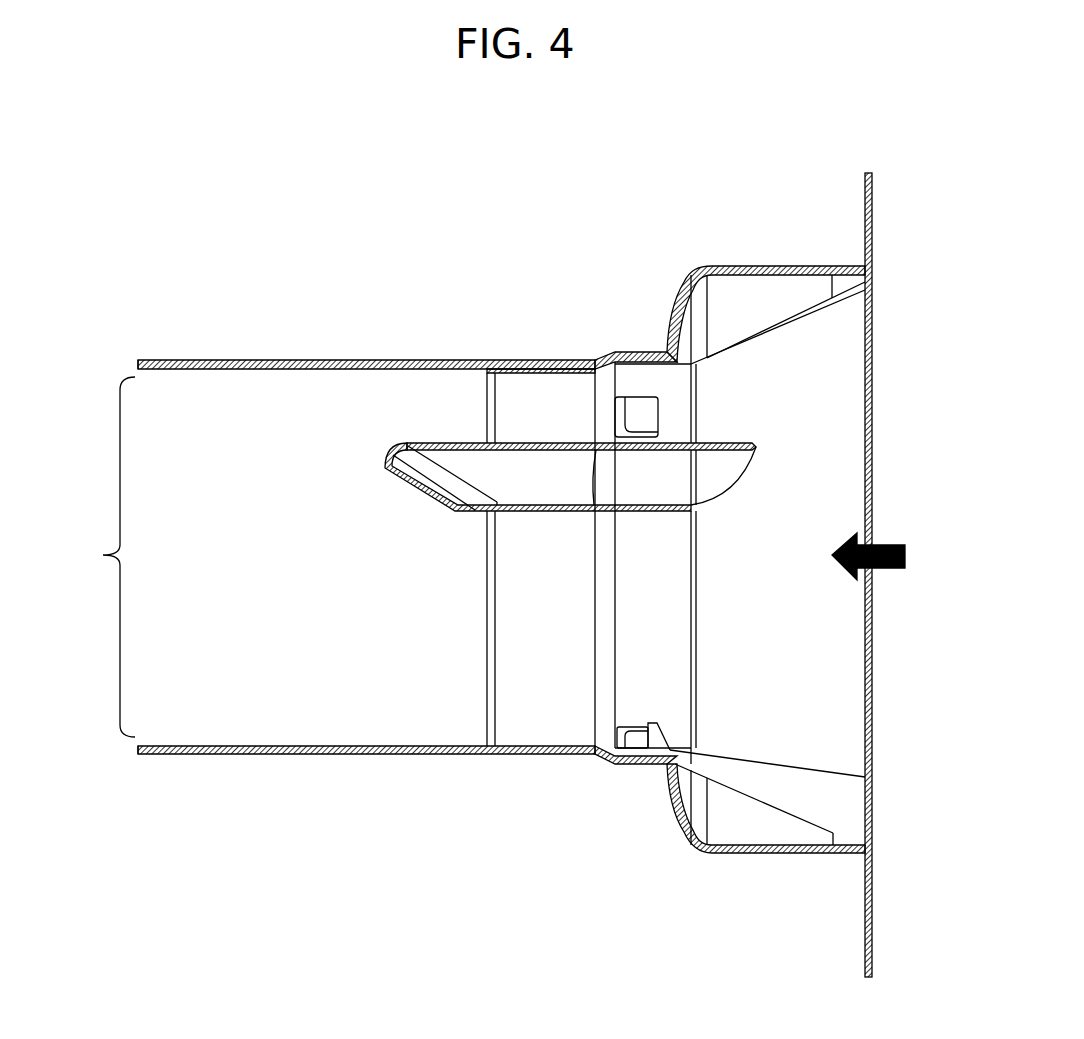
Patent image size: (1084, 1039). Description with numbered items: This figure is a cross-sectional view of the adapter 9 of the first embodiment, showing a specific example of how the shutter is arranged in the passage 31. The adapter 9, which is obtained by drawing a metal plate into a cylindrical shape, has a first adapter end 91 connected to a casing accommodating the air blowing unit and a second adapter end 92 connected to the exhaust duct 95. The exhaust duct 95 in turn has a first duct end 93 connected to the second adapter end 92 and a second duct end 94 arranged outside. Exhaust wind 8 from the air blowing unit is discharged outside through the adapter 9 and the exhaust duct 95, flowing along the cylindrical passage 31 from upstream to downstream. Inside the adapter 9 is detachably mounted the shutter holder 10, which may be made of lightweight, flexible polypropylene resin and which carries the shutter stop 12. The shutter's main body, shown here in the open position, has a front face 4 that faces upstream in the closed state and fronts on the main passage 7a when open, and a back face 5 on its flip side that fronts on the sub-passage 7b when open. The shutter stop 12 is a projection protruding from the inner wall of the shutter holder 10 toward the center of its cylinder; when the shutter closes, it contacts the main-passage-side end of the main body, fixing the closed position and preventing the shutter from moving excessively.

The front face 4 is at (477, 447).
The back face 5 is at (452, 441).
The main passage 7a is at (614, 637).
The sub-passage 7b is at (614, 403).
The exhaust wind 8 is at (890, 568).
The adapter 9 is at (713, 267).
The shutter holder 10 is at (632, 378).
The shutter stop 12 is at (620, 763).
The passage 31 is at (100, 557).
The first adapter end 91 is at (863, 267).
The second adapter end 92 is at (487, 363).
The first duct end 93 is at (594, 362).
The second duct end 94 is at (142, 362).
The exhaust duct 95 is at (248, 362).